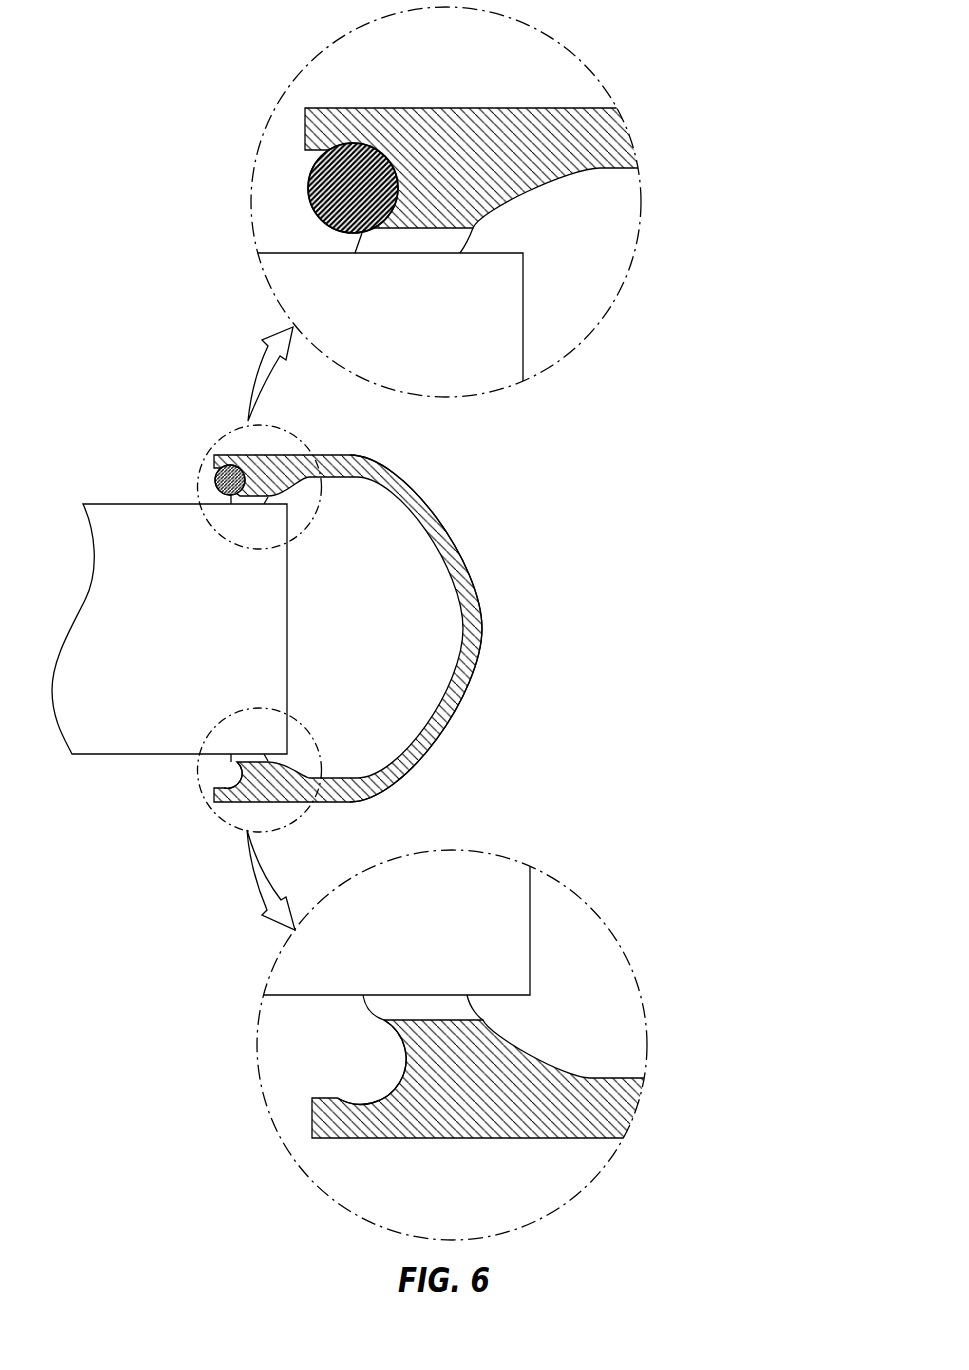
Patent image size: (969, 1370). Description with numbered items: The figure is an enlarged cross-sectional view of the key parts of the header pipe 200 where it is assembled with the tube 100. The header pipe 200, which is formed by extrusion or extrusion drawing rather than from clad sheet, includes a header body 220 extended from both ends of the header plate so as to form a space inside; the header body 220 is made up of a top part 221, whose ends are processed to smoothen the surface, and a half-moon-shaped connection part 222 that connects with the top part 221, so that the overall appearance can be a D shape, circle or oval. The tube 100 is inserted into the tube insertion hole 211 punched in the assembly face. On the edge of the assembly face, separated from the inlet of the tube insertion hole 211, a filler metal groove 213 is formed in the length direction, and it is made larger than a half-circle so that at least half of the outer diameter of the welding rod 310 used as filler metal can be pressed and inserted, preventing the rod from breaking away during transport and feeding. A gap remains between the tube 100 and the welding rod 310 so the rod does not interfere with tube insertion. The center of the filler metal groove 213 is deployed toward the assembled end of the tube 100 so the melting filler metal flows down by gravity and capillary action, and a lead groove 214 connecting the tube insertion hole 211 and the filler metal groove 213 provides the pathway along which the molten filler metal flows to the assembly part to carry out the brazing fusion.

The tube 100 is at (147, 504).
The header pipe 200 is at (483, 518).
The tube insertion hole 211 is at (250, 507).
The filler metal groove 213 is at (233, 775).
The lead groove 214 is at (383, 1013).
The header body 220 is at (517, 742).
The top part 221 is at (283, 455).
The connection part 222 is at (433, 742).
The welding rod 310 is at (322, 173).